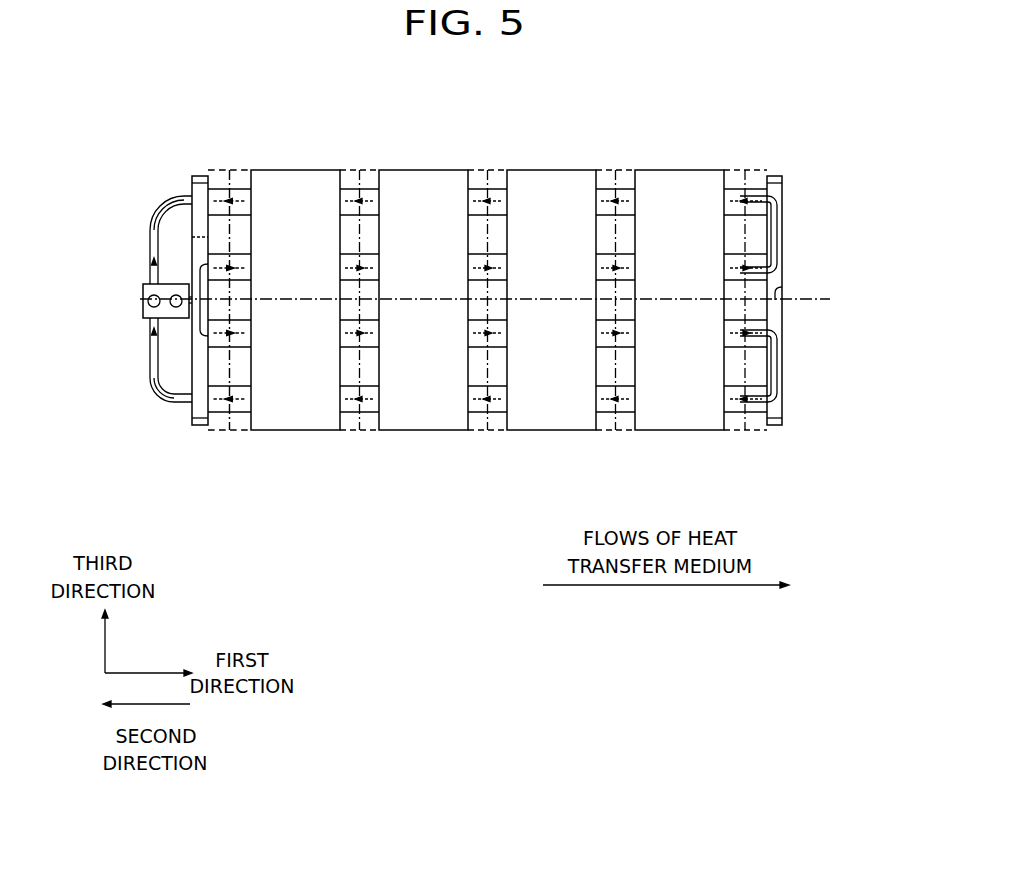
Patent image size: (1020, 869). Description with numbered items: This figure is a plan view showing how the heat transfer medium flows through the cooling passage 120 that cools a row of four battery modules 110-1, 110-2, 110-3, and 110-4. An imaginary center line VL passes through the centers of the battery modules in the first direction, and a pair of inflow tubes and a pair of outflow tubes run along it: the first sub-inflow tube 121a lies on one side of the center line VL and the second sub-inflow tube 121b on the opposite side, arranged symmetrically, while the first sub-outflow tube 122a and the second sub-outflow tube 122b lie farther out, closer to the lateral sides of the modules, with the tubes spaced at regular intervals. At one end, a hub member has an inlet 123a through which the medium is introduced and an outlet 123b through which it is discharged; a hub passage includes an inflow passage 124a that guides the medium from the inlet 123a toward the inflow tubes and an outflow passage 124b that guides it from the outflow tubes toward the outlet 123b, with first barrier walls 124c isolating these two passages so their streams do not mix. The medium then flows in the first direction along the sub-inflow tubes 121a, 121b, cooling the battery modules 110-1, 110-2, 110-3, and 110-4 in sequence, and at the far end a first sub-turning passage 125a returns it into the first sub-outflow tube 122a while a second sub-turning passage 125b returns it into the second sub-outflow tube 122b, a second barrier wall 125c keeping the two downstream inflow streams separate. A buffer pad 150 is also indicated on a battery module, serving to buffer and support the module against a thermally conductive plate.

The battery module 110-1 is at (241, 430).
The battery module 110-2 is at (372, 430).
The battery module 110-3 is at (502, 430).
The battery module 110-4 is at (628, 430).
The cooling passage 120 is at (146, 421).
The first sub-inflow tube 121a is at (760, 273).
The second sub-inflow tube 121b is at (760, 327).
The first sub-outflow tube 122a is at (760, 196).
The second sub-outflow tube 122b is at (760, 404).
The inlet 123a is at (158, 311).
The outlet 123b is at (144, 296).
The inflow passage 124a is at (152, 352).
The outflow passage 124b is at (150, 248).
The first barrier wall 124c is at (188, 228).
The first sub-turning passage 125a is at (778, 227).
The second sub-turning passage 125b is at (778, 364).
The second barrier wall 125c is at (778, 290).
The buffer pad 150 is at (421, 170).
The center line VL is at (830, 299).